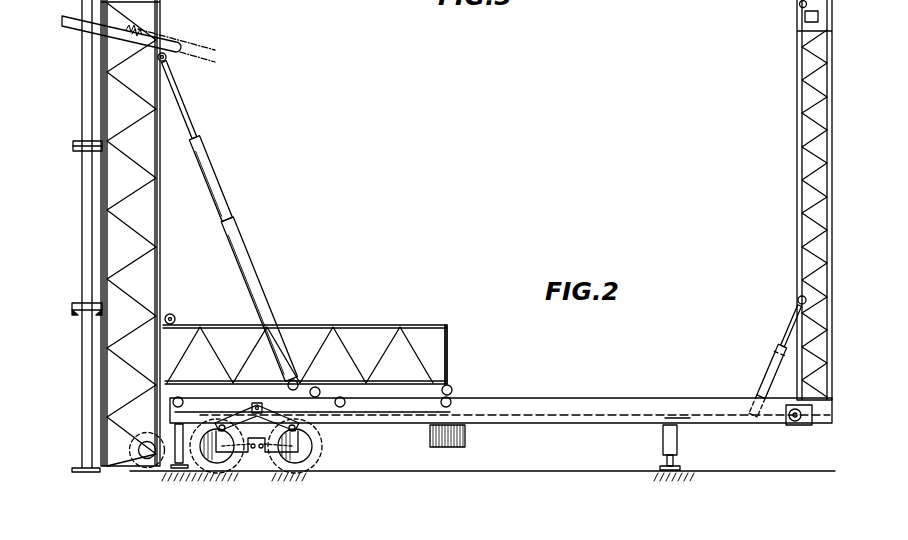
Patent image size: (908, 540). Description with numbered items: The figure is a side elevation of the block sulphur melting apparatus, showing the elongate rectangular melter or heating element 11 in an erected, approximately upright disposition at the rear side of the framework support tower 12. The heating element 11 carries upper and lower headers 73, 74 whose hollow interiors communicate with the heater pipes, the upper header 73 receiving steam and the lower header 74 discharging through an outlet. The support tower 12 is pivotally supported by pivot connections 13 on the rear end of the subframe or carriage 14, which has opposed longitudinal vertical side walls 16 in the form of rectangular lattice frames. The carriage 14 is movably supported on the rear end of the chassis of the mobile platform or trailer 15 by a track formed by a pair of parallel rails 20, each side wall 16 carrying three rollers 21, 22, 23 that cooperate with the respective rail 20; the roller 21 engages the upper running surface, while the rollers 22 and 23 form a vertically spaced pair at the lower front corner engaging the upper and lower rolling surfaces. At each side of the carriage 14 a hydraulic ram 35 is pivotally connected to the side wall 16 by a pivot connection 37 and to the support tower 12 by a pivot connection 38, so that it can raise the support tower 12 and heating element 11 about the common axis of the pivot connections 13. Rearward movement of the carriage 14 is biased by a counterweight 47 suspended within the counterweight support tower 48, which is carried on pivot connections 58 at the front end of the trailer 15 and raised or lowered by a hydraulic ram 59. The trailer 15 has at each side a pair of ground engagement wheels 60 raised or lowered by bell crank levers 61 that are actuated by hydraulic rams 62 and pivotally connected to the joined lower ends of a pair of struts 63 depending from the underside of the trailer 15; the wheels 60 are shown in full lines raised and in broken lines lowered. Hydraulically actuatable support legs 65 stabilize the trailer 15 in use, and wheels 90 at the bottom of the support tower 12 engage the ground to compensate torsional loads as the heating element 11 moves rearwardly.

The heating element 11 is at (78, 63).
The support tower 12 is at (174, 186).
The pivot connections 13 is at (176, 319).
The carriage 14 is at (348, 314).
The trailer 15 is at (574, 393).
The side walls 16 is at (442, 325).
The rails 20 is at (677, 409).
The roller 21 is at (340, 397).
The roller 22 is at (449, 387).
The roller 23 is at (455, 400).
The hydraulic ram 35 is at (266, 258).
The pivot connection 37 is at (301, 385).
The pivot connection 38 is at (168, 53).
The counterweight 47 is at (820, 16).
The counterweight support tower 48 is at (838, 123).
The pivot connections 58 is at (822, 392).
The hydraulic ram 59 is at (763, 379).
The ground engagement wheels 60 is at (290, 473).
The bell crank levers 61 is at (329, 432).
The hydraulic rams 62 is at (262, 412).
The struts 63 is at (222, 470).
The support legs 65 is at (173, 426).
The upper header 73 is at (72, 154).
The lower header 74 is at (74, 136).
The wheels 90 is at (148, 462).